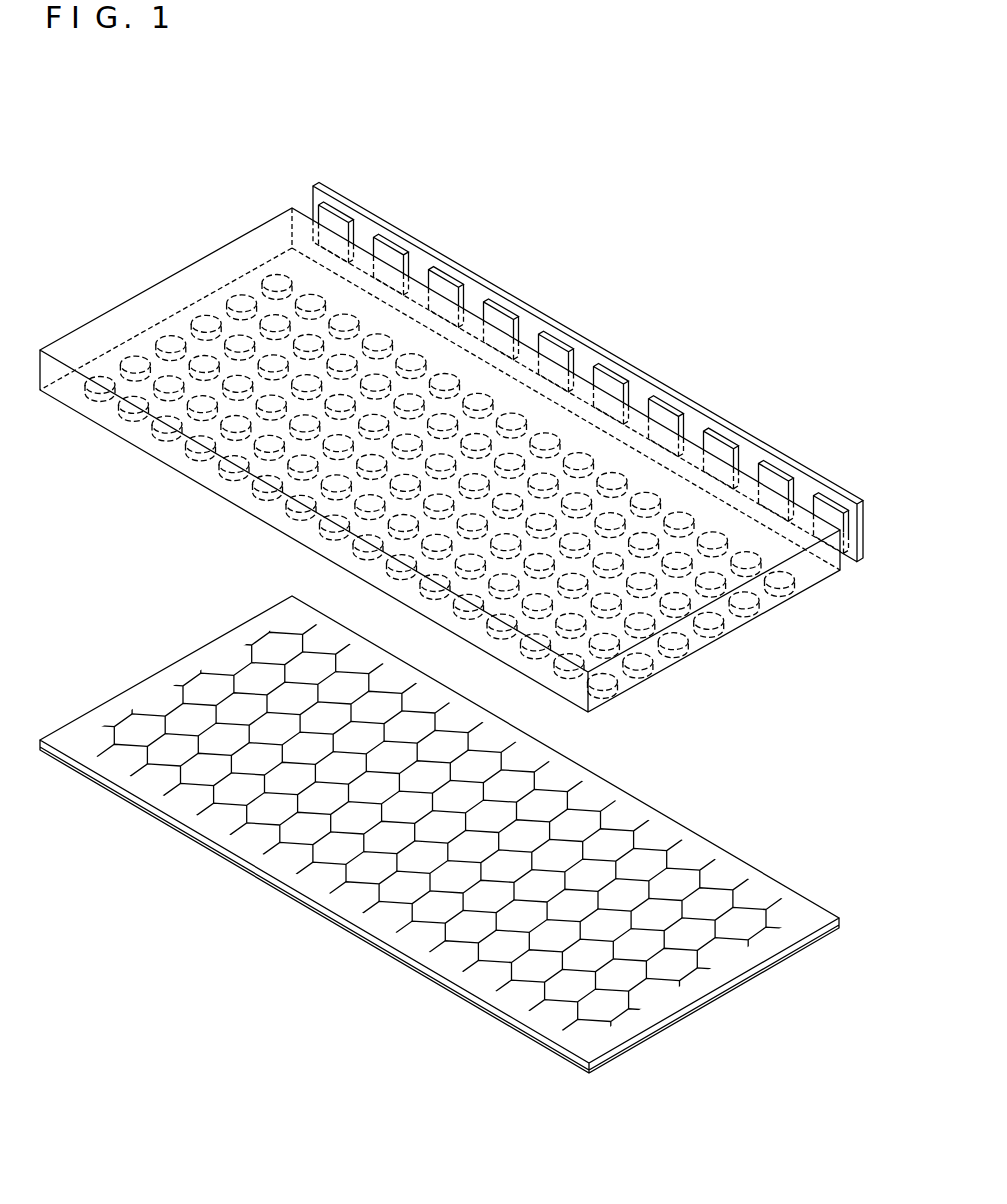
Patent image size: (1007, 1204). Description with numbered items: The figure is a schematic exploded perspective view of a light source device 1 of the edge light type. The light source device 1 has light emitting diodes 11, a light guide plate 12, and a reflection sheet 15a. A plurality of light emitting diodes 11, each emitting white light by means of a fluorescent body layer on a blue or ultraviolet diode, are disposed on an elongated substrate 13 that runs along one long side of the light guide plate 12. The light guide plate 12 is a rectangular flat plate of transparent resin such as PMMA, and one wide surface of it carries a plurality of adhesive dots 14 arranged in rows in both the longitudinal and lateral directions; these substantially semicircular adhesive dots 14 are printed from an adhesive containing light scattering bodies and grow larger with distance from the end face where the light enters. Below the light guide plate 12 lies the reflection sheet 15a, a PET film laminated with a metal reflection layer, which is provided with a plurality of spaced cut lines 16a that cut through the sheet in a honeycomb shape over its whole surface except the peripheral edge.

The light source device 1 is at (243, 197).
The light emitting diode 11 is at (771, 477).
The light guide plate 12 is at (125, 302).
The elongated substrate 13 is at (858, 503).
The adhesive dots 14 is at (222, 483).
The reflection sheet 15a is at (147, 679).
The cut lines 16a is at (233, 800).